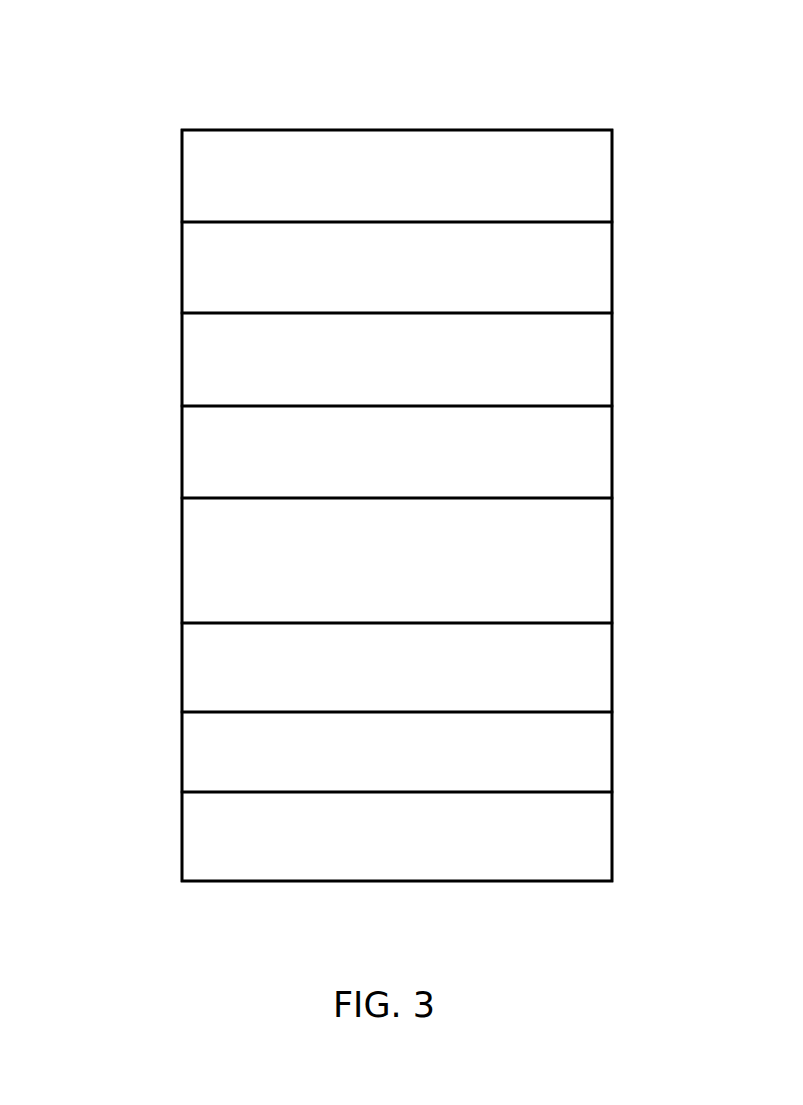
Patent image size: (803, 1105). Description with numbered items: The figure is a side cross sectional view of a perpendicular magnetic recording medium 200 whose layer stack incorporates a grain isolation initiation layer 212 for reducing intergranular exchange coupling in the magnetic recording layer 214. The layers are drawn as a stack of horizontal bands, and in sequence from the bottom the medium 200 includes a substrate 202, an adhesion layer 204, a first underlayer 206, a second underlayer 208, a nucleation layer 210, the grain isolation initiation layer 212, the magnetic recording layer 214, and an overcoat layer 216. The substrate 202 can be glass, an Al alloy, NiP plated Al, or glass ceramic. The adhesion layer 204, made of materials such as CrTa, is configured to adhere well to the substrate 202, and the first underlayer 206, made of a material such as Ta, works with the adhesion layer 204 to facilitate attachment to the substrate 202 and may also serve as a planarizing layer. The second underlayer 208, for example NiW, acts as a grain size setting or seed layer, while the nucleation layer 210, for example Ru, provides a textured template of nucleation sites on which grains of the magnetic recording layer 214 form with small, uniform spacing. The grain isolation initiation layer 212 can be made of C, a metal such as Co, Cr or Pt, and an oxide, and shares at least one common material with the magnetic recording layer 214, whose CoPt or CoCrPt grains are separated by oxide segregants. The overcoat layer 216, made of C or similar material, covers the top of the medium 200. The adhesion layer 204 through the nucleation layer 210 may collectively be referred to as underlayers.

The PMR medium 200 is at (145, 114).
The substrate 202 is at (612, 828).
The adhesion layer 204 is at (612, 738).
The first underlayer 206 is at (612, 659).
The second underlayer 208 is at (612, 554).
The nucleation layer 210 is at (612, 444).
The grain isolation initiation layer 212 is at (612, 352).
The magnetic recording layer 214 is at (612, 259).
The overcoat layer 216 is at (612, 166).